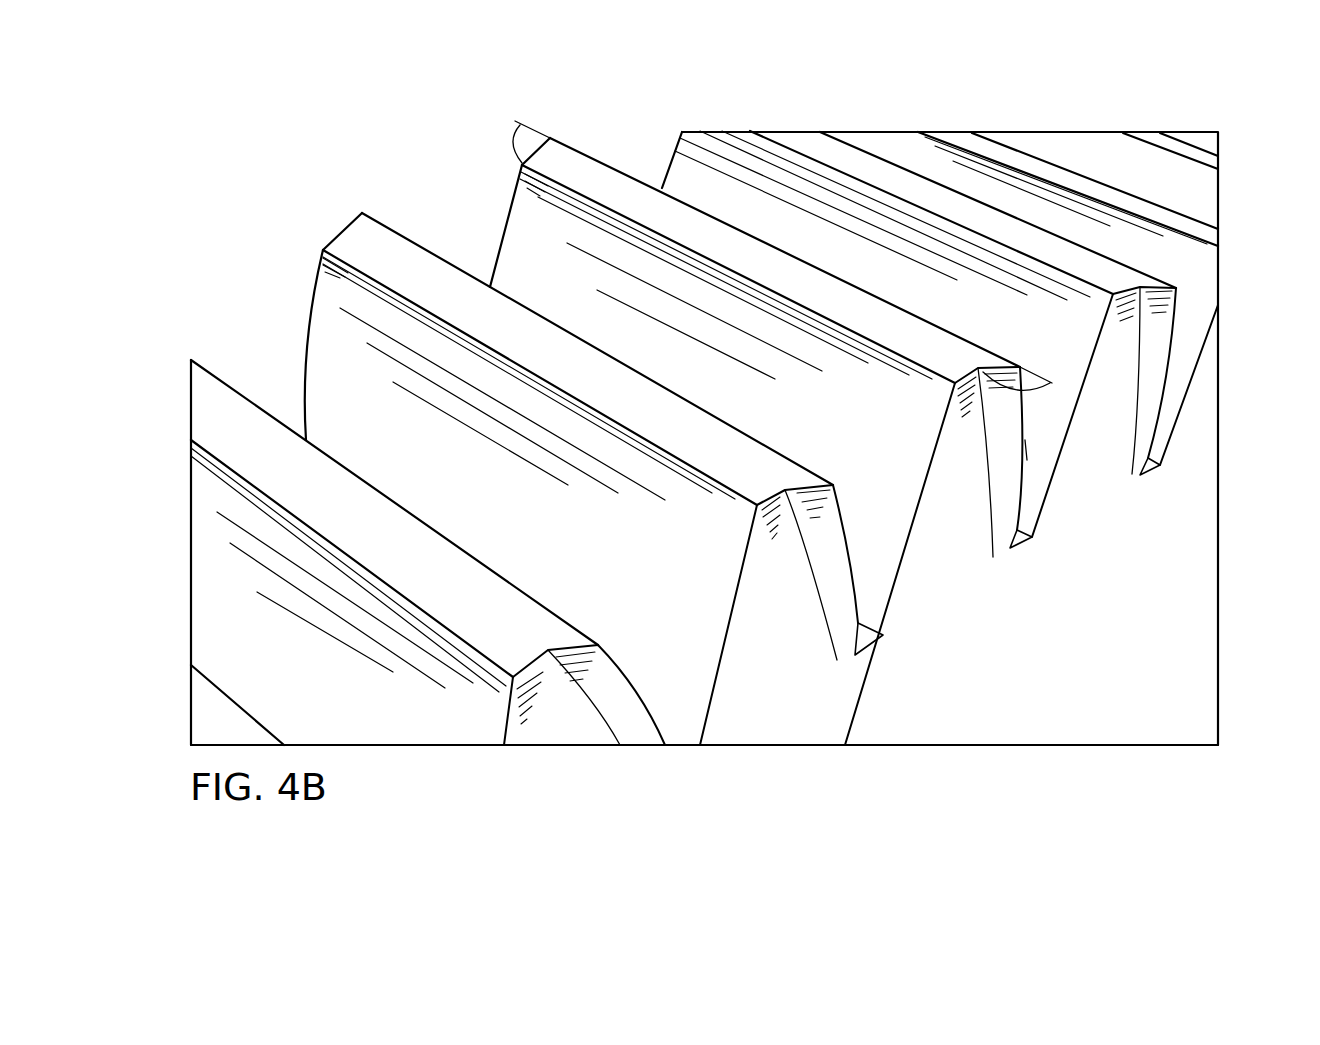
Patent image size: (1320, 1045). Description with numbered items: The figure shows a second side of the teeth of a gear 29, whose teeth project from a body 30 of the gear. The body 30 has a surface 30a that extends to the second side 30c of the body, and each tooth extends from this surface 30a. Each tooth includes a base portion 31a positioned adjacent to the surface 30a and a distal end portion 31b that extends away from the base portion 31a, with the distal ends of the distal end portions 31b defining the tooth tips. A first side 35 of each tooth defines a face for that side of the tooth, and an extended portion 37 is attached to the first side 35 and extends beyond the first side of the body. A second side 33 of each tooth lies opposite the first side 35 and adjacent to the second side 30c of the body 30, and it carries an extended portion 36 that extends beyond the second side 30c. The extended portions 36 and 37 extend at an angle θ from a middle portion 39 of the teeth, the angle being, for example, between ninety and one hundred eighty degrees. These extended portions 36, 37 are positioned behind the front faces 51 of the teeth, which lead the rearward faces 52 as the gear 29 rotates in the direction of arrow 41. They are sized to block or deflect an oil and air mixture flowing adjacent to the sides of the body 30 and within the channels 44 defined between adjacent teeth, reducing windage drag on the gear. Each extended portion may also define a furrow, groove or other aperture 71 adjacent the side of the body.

The gear 29 is at (290, 128).
The body portion 30 is at (1141, 669).
The surface 30a is at (878, 642).
The second side 30c is at (1048, 712).
The base portion 31a is at (523, 512).
The distal end portion 31b is at (897, 178).
The second side 33 is at (927, 340).
The first side 35 is at (334, 240).
The extended portion 36 is at (840, 546).
The extended portion 37 is at (548, 138).
The middle portion 39 is at (570, 168).
The arrow 41 is at (813, 107).
The channels 44 is at (488, 262).
The front faces 51 is at (370, 278).
The rearward faces 52 is at (702, 207).
The aperture 71 is at (800, 550).